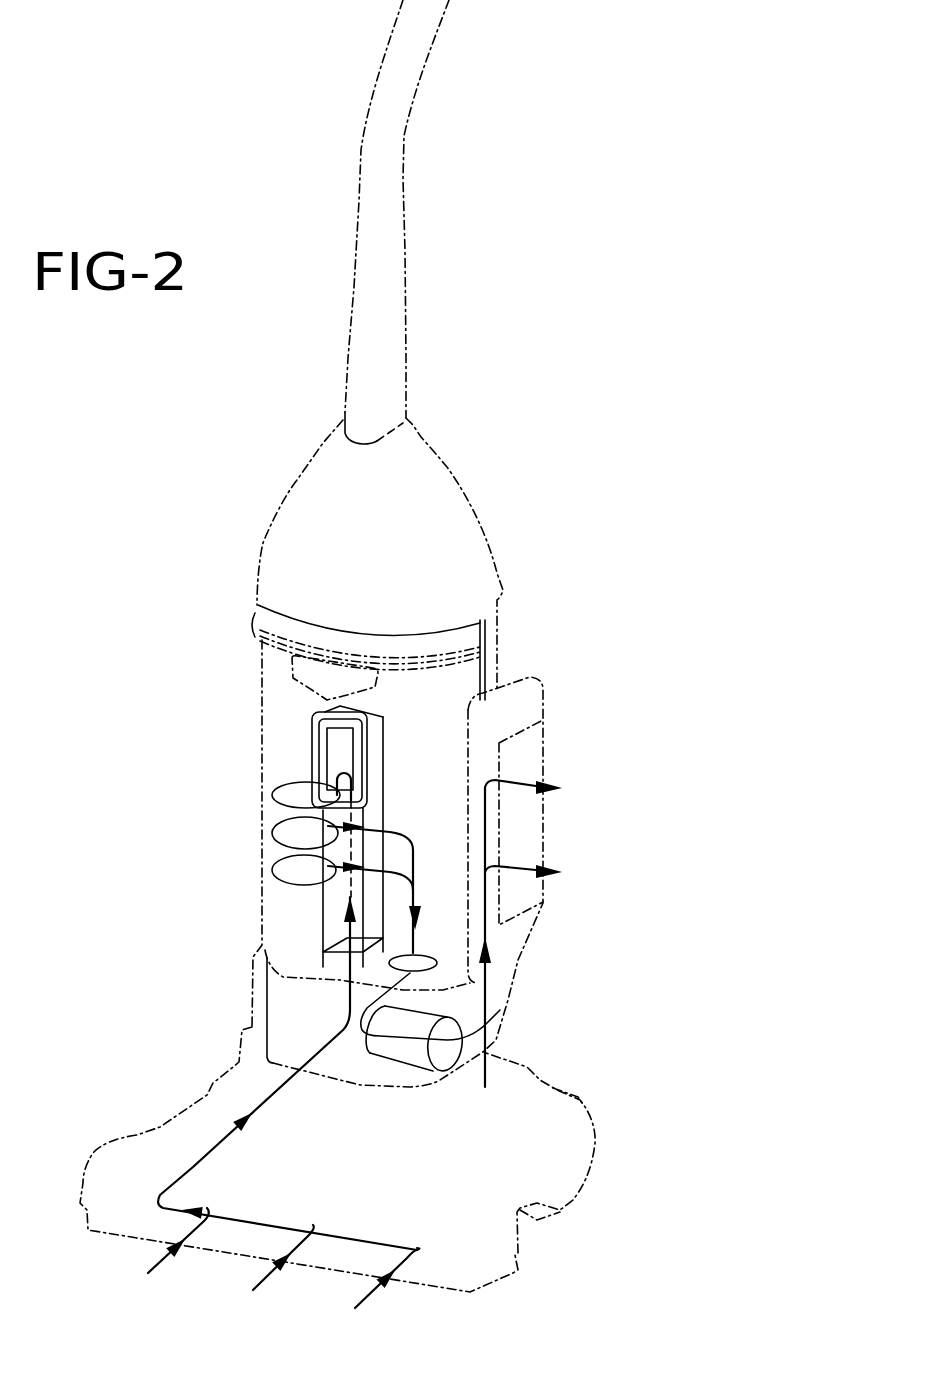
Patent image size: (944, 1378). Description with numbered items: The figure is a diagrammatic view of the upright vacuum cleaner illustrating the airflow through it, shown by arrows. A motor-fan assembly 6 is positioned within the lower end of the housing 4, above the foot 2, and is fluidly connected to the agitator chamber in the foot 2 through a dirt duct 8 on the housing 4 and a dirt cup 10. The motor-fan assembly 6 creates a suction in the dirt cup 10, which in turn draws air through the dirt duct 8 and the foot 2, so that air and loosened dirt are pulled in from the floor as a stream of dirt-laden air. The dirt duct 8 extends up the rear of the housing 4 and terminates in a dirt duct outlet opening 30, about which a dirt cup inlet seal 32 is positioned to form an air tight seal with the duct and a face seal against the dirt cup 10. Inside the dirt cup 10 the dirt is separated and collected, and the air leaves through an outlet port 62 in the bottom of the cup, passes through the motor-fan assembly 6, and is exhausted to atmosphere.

The foot 2 is at (555, 1065).
The housing 4 is at (500, 529).
The motor-fan assembly 6 is at (412, 1070).
The dirt duct 8 is at (332, 920).
The dirt cup 10 is at (245, 800).
The dirt duct outlet opening 30 is at (337, 760).
The dirt cup inlet seal 32 is at (310, 718).
The outlet port 62 is at (427, 970).